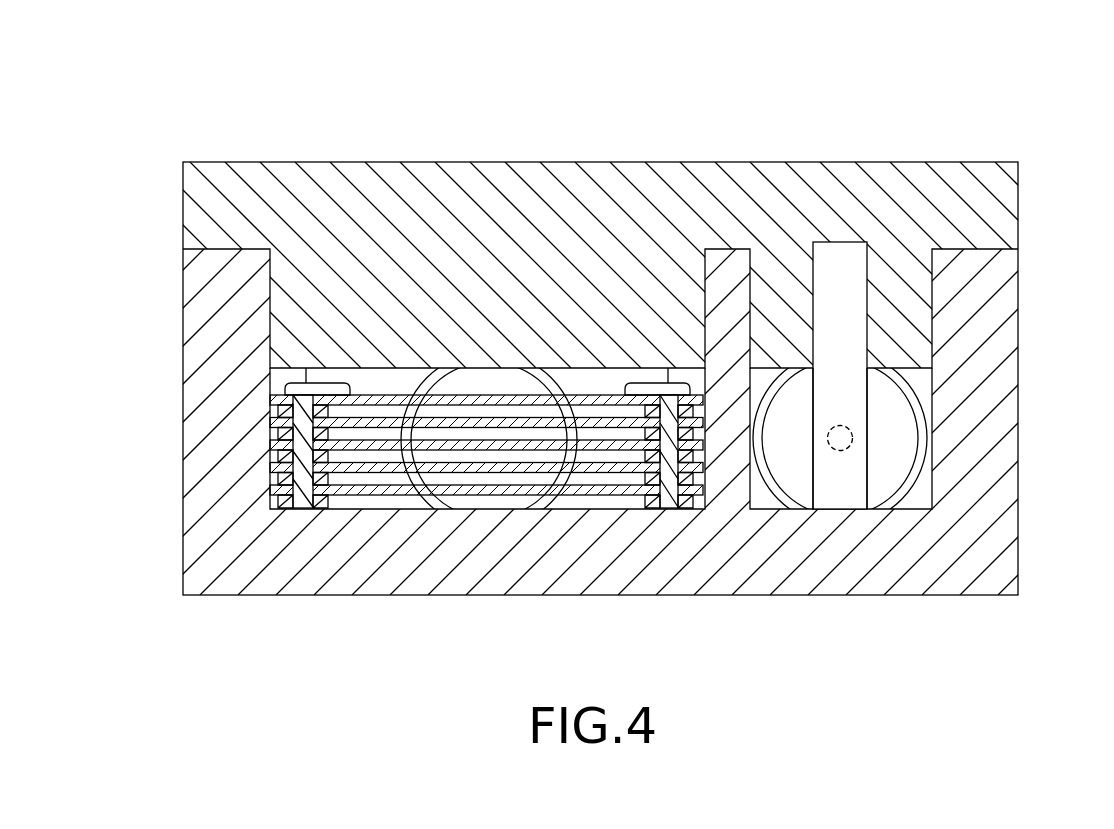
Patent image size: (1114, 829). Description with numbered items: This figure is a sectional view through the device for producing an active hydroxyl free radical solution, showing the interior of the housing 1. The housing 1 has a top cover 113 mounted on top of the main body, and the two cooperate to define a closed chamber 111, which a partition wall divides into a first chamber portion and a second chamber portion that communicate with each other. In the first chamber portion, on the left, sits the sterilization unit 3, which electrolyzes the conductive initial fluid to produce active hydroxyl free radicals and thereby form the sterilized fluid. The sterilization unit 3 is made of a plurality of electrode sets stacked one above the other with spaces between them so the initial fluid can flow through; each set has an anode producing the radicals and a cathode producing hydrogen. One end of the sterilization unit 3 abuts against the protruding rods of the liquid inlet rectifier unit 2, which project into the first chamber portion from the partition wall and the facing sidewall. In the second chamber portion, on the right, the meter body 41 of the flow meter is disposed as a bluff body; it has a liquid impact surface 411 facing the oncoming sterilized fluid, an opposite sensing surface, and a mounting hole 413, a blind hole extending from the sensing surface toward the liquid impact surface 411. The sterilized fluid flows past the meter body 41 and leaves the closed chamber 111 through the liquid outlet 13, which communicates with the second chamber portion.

The housing 1 is at (602, 150).
The liquid inlet rectifier unit 2 is at (400, 501).
The sterilization unit 3 is at (327, 490).
The liquid outlet 13 is at (897, 457).
The meter body 41 is at (868, 307).
The closed chamber 111 is at (922, 495).
The top cover 113 is at (358, 185).
The liquid impact surface 411 is at (845, 392).
The mounting hole 413 is at (852, 435).